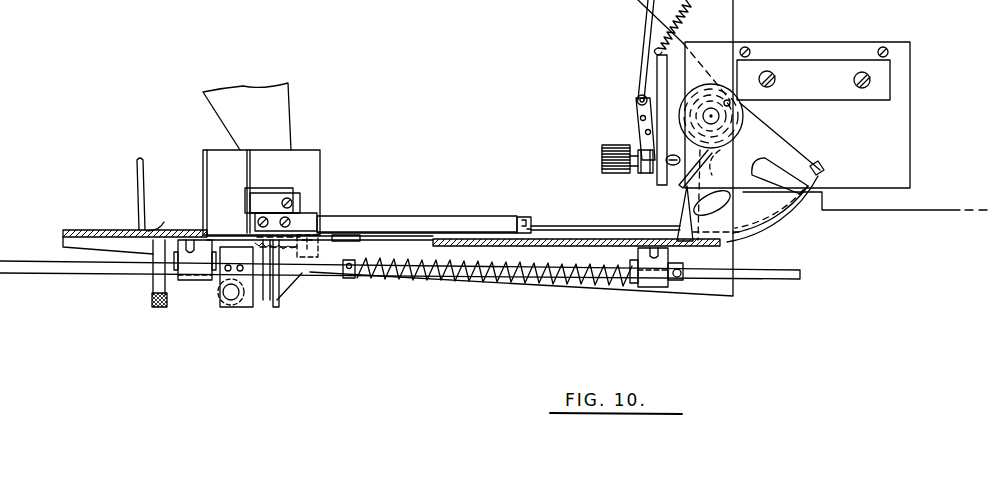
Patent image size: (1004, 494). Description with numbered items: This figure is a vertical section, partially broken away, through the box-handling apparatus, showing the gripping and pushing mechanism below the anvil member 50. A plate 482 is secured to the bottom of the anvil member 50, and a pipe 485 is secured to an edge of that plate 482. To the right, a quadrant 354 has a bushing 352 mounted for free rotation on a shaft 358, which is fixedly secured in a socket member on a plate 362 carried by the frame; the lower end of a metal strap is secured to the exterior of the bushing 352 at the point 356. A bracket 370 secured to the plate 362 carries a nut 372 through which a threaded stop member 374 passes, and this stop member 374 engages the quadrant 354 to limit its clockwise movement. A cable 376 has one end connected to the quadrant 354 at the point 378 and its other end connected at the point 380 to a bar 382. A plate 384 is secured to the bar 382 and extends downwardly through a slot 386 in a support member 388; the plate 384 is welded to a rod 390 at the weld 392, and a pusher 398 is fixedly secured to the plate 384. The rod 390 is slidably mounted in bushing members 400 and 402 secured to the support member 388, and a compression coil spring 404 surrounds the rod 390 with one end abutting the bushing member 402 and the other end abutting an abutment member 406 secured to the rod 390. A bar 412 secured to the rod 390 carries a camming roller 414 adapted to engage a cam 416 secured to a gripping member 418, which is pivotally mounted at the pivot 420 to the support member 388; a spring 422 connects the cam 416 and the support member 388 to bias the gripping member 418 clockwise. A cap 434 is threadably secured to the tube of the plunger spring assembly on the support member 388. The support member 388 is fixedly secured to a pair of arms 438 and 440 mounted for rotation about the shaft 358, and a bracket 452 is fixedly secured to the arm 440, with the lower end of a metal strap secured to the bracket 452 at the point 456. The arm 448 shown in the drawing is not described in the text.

The anvil member 50 is at (283, 110).
The bushing 352 is at (668, 93).
The quadrant 354 is at (775, 157).
The strap attachment point 356 is at (703, 117).
The shaft 358 is at (742, 114).
The plate 362 is at (900, 128).
The bracket 370 is at (833, 72).
The nut 372 is at (646, 175).
The threaded stop member 374 is at (601, 160).
The cable 376 is at (562, 226).
The cable connection to quadrant 378 is at (822, 171).
The cable connection to bar 380 is at (523, 218).
The bar 382 is at (428, 226).
The plate 384 is at (262, 198).
The slot 386 is at (387, 240).
The support member 388 is at (65, 246).
The rod 390 is at (325, 266).
The weld 392 is at (267, 265).
The pusher 398 is at (203, 172).
The bushing member 400 is at (197, 281).
The bushing member 402 is at (653, 290).
The compression coil spring 404 is at (457, 280).
The abutment member 406 is at (350, 278).
The bar 412 is at (243, 308).
The camming roller 414 is at (233, 304).
The cam 416 is at (280, 306).
The gripping member 418 is at (350, 240).
The pivot 420 is at (300, 257).
The spring 422 is at (257, 243).
The cap 434 is at (151, 300).
The arm 438 is at (727, 222).
The arm 440 is at (710, 208).
The arm 448 is at (677, 190).
The bracket 452 is at (637, 128).
The strap attachment point 456 is at (637, 100).
The plate 482 is at (163, 228).
The pipe 485 is at (137, 176).